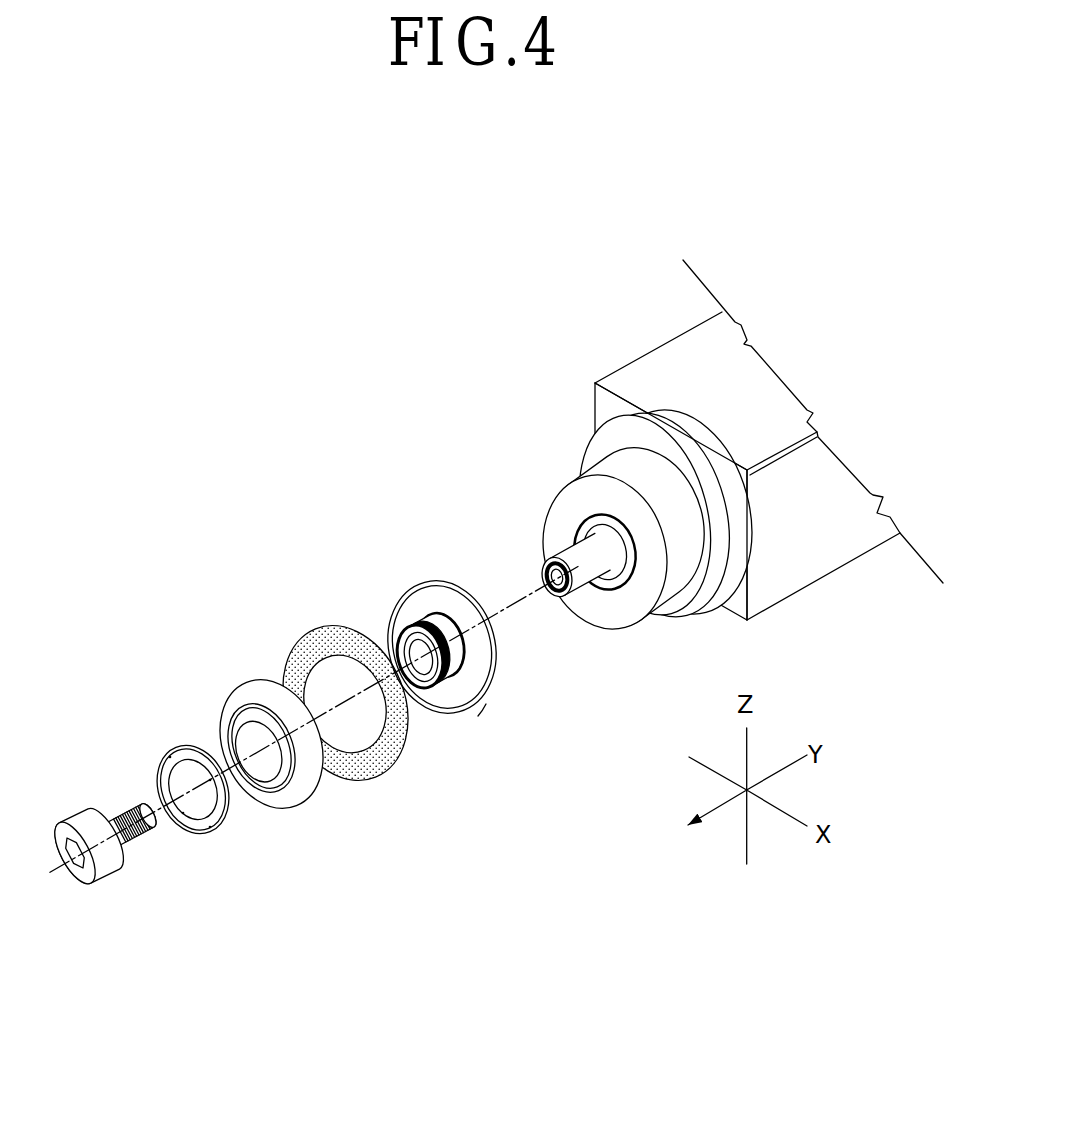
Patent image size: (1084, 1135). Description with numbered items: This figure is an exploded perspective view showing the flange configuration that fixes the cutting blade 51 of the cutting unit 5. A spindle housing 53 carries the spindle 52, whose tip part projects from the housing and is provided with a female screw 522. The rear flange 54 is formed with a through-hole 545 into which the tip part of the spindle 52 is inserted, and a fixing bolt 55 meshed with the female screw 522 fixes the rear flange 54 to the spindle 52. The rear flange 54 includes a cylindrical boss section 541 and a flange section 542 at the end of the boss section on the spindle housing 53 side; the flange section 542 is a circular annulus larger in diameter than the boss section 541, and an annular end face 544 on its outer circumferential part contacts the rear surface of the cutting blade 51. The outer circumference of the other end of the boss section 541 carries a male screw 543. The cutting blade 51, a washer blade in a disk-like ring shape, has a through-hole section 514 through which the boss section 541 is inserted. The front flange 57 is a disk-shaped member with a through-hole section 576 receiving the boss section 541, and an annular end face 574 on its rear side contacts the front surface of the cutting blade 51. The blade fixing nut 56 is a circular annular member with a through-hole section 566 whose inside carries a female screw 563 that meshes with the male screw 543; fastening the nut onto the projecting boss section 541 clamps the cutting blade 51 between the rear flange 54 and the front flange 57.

The cutting unit 5 is at (168, 515).
The cutting blade 51 is at (353, 691).
The through-hole section 514 is at (390, 777).
The spindle 52 is at (557, 567).
The female screw 522 is at (558, 595).
The spindle housing 53 is at (587, 330).
The rear flange 54 is at (430, 644).
The cylindrical boss section 541 is at (413, 615).
The flange section 542 is at (455, 583).
The male screw 543 is at (440, 690).
The annular end face 544 is at (480, 716).
The through-hole 545 is at (388, 655).
The fixing bolt 55 is at (82, 778).
The blade fixing nut 56 is at (197, 783).
The female screw 563 is at (175, 817).
The through-hole section 566 is at (217, 823).
The front flange 57 is at (295, 744).
The annular end face 574 is at (318, 794).
The through-hole section 576 is at (283, 787).